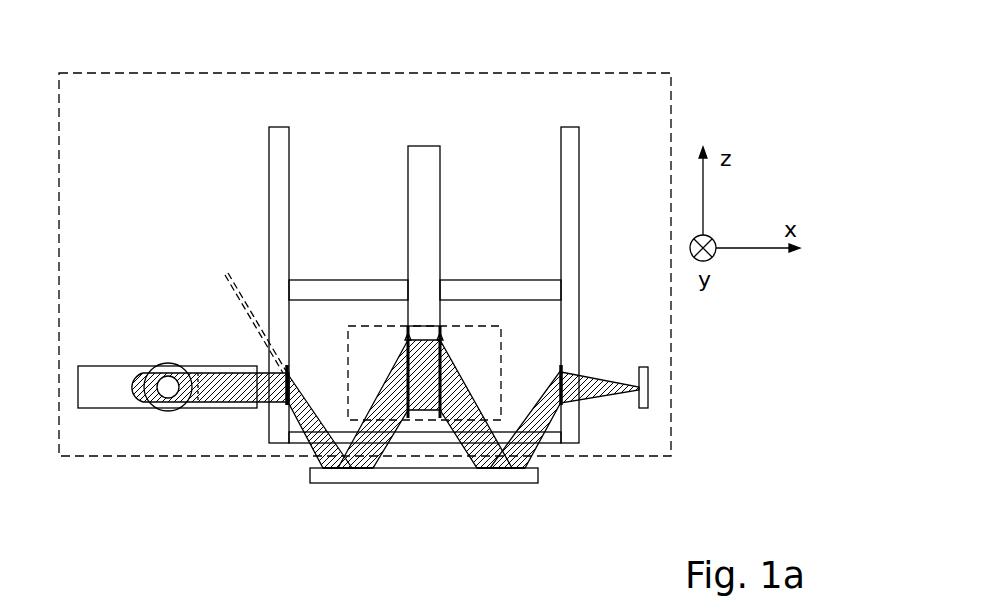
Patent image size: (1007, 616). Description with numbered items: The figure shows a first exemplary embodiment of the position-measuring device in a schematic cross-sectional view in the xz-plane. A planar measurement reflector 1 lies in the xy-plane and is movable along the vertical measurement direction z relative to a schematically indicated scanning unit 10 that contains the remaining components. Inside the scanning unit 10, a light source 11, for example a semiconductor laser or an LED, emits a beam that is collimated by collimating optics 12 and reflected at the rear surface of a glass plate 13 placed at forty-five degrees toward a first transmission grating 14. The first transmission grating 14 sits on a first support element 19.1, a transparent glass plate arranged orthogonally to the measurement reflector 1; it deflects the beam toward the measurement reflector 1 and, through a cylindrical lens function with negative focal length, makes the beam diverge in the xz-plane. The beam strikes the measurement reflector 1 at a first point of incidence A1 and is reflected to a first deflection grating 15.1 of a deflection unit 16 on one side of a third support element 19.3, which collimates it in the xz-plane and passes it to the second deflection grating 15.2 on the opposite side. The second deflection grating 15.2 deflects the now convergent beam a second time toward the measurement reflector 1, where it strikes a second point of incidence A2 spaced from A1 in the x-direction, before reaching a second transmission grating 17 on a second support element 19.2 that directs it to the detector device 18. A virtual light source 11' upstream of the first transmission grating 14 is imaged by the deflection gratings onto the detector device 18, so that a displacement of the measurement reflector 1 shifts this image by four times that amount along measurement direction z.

The scanning unit 10 is at (592, 73).
The planar measurement reflector 1 is at (420, 484).
The light source 11 is at (167, 415).
The virtual light source 11' is at (224, 305).
The collimating optics 12 is at (168, 362).
The glass plate 13 is at (92, 368).
The first transmission grating 14 is at (290, 377).
The first deflection grating 15.1 is at (406, 355).
The second deflection grating 15.2 is at (446, 356).
The deflection unit 16 is at (461, 325).
The second transmission grating 17 is at (561, 376).
The detector device 18 is at (644, 367).
The first support element 19.1 is at (275, 147).
The second support element 19.2 is at (574, 146).
The third support element 19.3 is at (436, 162).
The first point of incidence A1 is at (345, 484).
The second point of incidence A2 is at (500, 484).